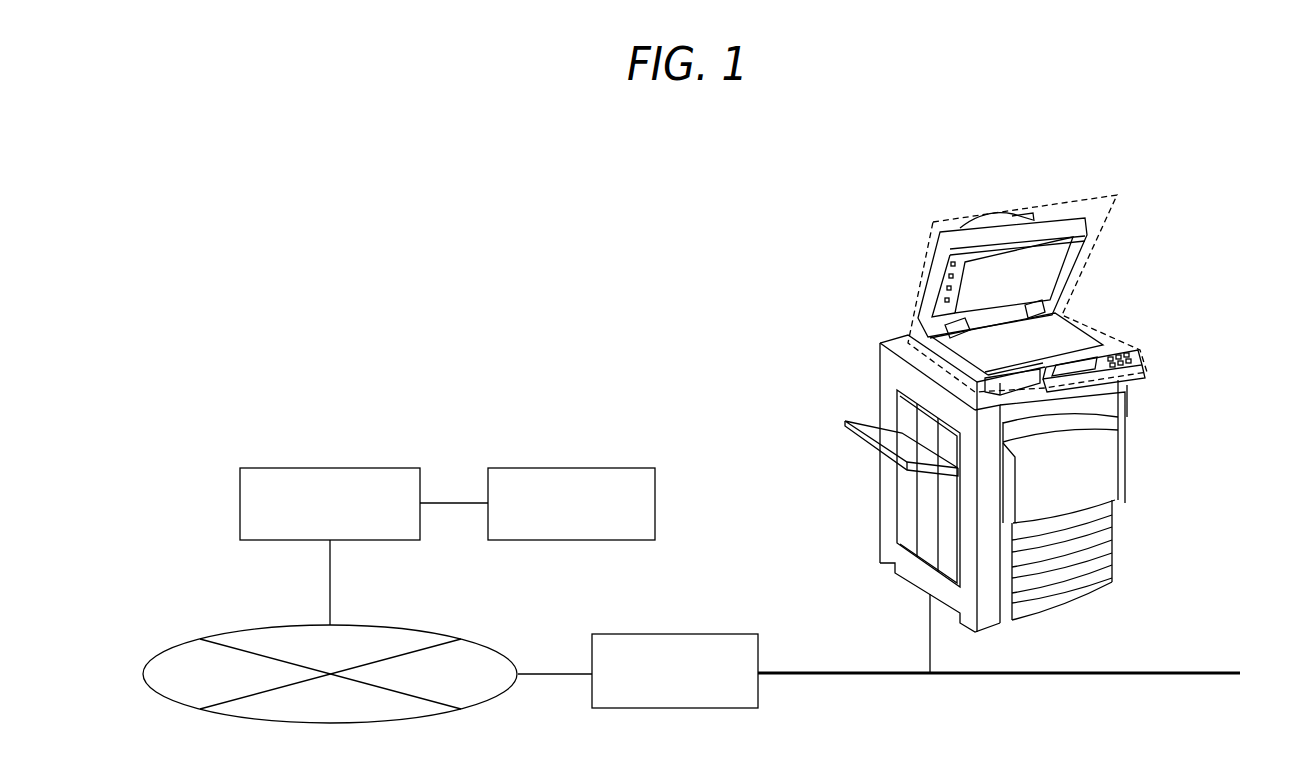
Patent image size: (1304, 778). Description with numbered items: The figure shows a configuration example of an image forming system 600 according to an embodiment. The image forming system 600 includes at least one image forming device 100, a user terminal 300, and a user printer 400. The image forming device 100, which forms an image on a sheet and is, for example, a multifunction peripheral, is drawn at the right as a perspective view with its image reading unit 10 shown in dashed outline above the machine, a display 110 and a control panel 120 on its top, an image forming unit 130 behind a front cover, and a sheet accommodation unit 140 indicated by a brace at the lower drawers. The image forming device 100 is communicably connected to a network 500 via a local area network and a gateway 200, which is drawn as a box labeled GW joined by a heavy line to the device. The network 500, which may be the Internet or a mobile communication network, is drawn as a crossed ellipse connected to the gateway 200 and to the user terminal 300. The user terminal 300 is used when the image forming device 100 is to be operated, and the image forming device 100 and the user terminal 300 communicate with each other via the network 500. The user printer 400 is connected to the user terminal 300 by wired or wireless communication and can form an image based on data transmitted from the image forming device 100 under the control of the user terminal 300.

The image forming device 100 is at (1012, 182).
The image reading unit 10 is at (1084, 197).
The display 110 is at (1103, 380).
The control panel 120 is at (1140, 367).
The image forming unit 130 is at (1093, 472).
The sheet accommodation unit 140 is at (1128, 502).
The gateway 200 is at (687, 634).
The user terminal 300 is at (348, 468).
The user printer 400 is at (585, 468).
The network 500 is at (407, 627).
The image forming system 600 is at (699, 410).